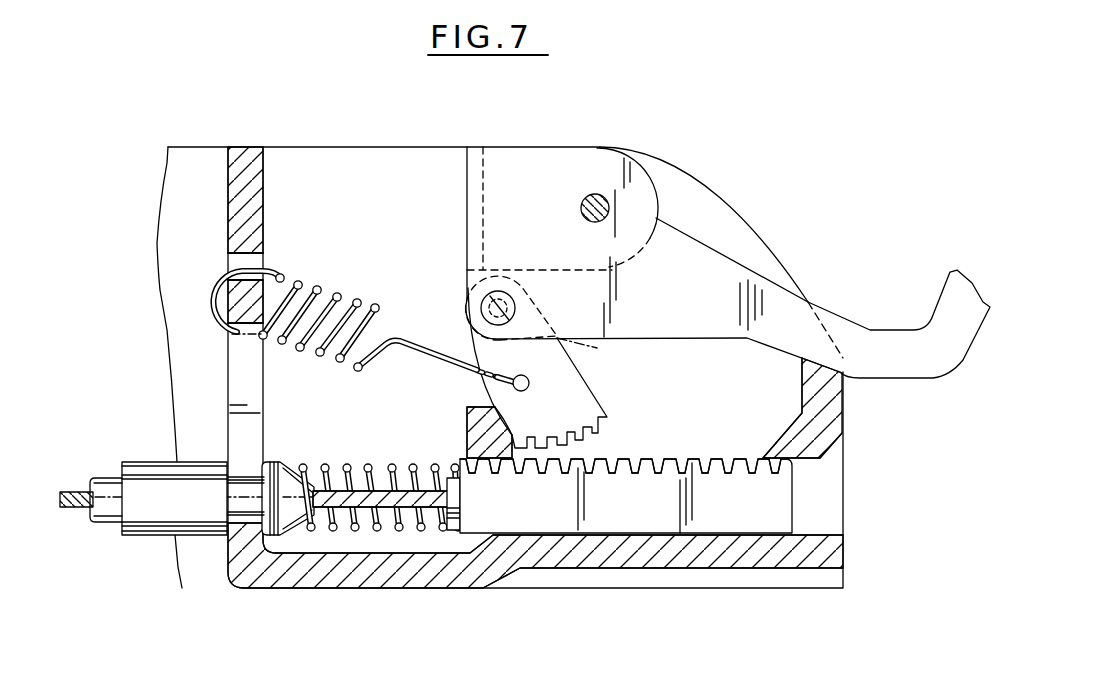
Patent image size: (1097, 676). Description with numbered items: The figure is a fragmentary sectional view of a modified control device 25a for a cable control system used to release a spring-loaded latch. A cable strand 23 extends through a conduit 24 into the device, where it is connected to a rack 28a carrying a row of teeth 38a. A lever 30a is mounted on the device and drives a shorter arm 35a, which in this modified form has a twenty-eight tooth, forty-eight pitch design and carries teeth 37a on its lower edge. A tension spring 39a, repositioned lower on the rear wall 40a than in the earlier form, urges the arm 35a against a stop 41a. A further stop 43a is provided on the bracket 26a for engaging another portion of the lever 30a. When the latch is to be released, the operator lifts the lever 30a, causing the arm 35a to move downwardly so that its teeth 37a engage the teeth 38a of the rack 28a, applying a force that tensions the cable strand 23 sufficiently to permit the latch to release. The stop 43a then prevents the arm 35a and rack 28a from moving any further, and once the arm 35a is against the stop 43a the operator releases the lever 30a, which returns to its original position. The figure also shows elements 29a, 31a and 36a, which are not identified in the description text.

The cable strand 23 is at (75, 492).
The conduit 24 is at (115, 512).
The modified control device 25a is at (356, 135).
The bracket 26a is at (717, 570).
The rack 28a is at (762, 516).
The compression spring 29a is at (325, 467).
The lever 30a is at (947, 298).
The mounting screw 31a is at (594, 194).
The arm 35a is at (577, 375).
The pivot pin 36a is at (532, 302).
The teeth 37a is at (608, 417).
The teeth 38a is at (698, 460).
The tension spring 39a is at (317, 287).
The rear wall 40a is at (228, 218).
The stop 41a is at (467, 418).
The stop 43a is at (833, 417).